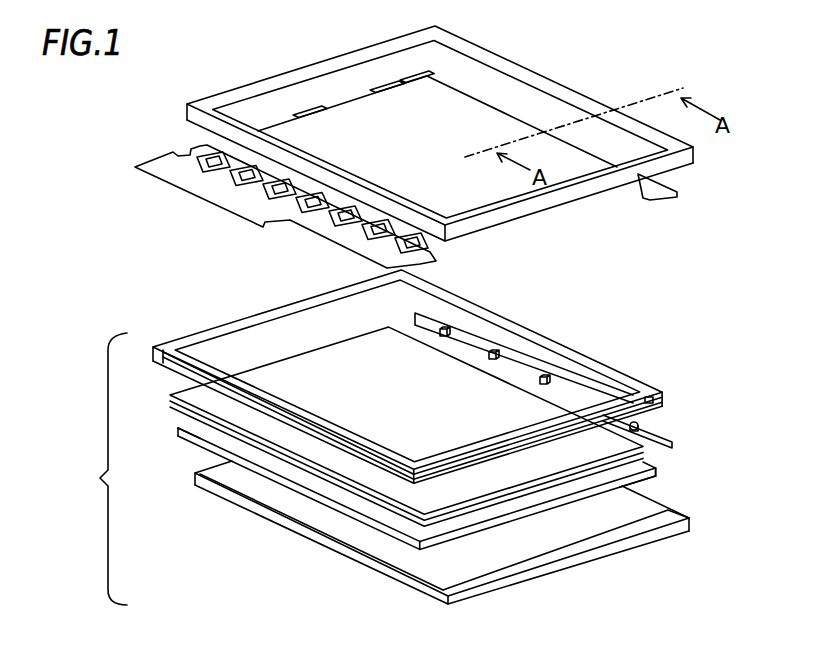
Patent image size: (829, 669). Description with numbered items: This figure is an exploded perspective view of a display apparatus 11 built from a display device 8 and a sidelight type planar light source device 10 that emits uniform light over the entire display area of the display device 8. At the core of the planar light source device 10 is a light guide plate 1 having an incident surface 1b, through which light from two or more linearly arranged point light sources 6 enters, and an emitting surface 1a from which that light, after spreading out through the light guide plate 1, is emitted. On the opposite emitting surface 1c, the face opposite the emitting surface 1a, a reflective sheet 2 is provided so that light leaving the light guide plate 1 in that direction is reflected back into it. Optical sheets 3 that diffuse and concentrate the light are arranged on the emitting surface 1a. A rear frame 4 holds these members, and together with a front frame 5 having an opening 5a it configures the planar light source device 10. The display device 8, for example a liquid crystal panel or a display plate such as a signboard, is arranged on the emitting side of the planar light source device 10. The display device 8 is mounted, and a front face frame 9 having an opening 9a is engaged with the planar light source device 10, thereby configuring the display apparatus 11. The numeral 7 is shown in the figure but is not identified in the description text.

The light guide plate 1 is at (178, 432).
The emitting surface 1a is at (223, 443).
The incident surface 1b is at (657, 477).
The opposite emitting surface 1c is at (240, 492).
The reflective sheet 2 is at (350, 525).
The optical sheets 3 is at (163, 383).
The rear frame 4 is at (655, 512).
The front frame 5 is at (567, 353).
The opening 5a is at (497, 317).
The point light sources 6 is at (655, 415).
The fixing member 7 is at (667, 436).
The display device 8 is at (645, 197).
The front face frame 9 is at (502, 68).
The opening 9a is at (523, 95).
The planar light source device 10 is at (91, 469).
The display apparatus 11 is at (280, 583).